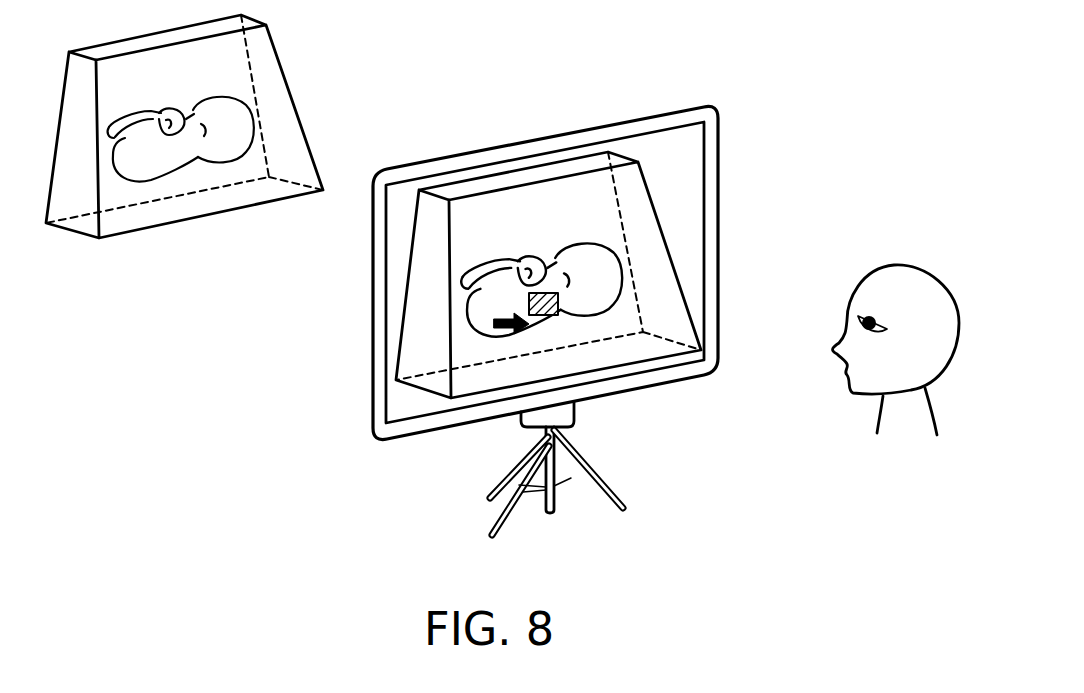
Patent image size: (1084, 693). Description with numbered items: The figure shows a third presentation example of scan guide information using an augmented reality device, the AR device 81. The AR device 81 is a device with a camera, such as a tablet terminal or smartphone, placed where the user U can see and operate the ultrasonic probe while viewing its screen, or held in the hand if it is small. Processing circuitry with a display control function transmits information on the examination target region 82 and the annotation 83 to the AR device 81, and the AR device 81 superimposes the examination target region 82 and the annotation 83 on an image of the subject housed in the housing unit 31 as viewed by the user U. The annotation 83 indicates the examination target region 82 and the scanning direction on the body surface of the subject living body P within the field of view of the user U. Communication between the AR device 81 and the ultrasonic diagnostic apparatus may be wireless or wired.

The housing unit 31 is at (277, 53).
The living body P is at (205, 98).
The AR device 81 is at (678, 175).
The examination target region 82 is at (532, 292).
The annotation 83 is at (505, 315).
The user U is at (925, 268).